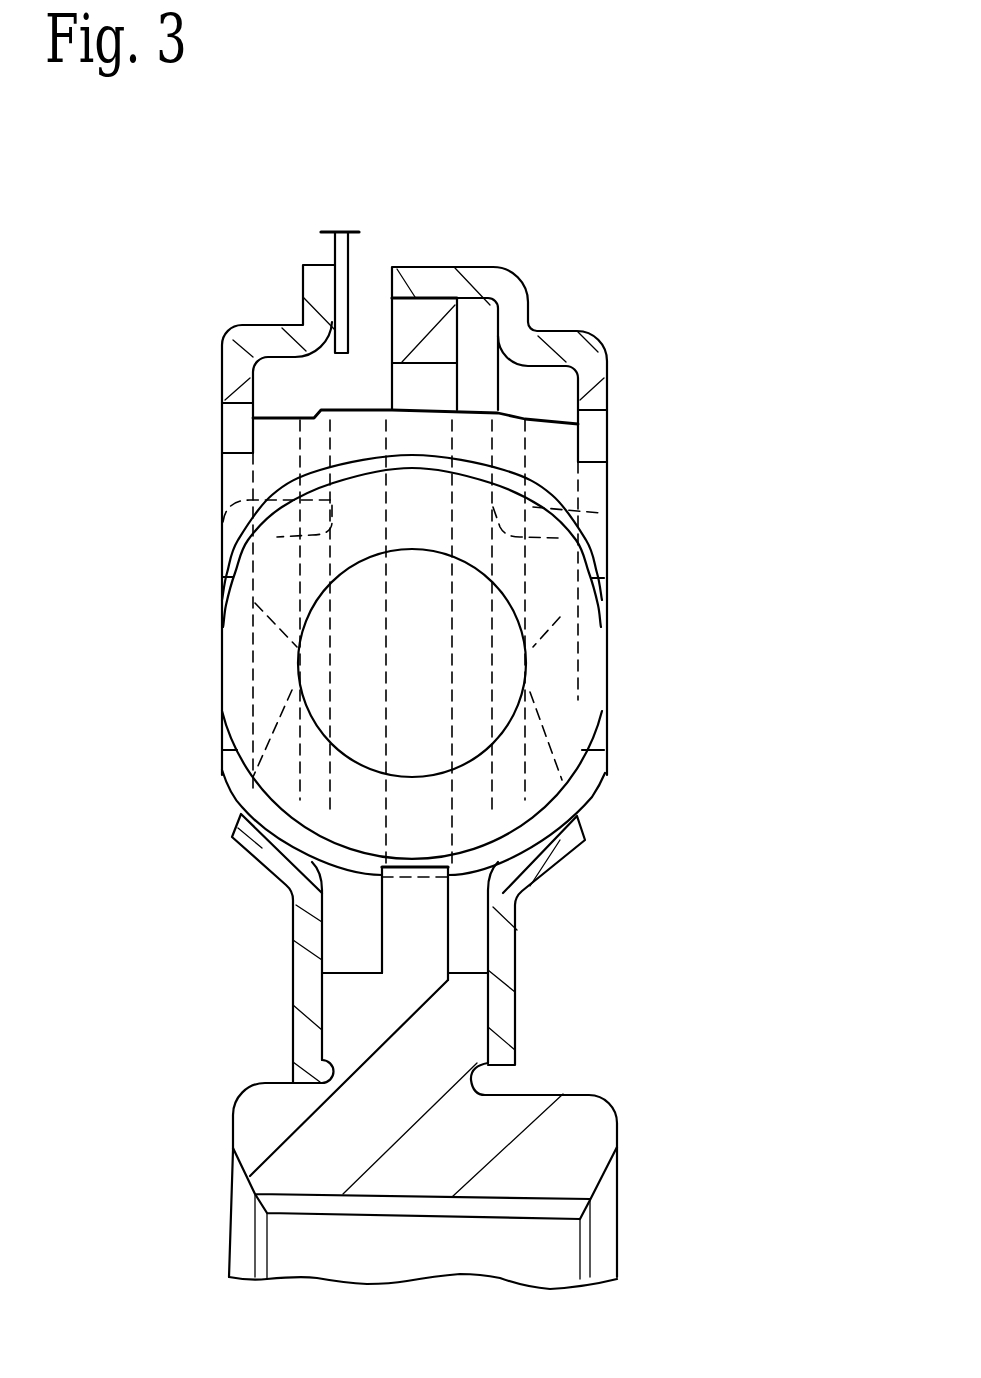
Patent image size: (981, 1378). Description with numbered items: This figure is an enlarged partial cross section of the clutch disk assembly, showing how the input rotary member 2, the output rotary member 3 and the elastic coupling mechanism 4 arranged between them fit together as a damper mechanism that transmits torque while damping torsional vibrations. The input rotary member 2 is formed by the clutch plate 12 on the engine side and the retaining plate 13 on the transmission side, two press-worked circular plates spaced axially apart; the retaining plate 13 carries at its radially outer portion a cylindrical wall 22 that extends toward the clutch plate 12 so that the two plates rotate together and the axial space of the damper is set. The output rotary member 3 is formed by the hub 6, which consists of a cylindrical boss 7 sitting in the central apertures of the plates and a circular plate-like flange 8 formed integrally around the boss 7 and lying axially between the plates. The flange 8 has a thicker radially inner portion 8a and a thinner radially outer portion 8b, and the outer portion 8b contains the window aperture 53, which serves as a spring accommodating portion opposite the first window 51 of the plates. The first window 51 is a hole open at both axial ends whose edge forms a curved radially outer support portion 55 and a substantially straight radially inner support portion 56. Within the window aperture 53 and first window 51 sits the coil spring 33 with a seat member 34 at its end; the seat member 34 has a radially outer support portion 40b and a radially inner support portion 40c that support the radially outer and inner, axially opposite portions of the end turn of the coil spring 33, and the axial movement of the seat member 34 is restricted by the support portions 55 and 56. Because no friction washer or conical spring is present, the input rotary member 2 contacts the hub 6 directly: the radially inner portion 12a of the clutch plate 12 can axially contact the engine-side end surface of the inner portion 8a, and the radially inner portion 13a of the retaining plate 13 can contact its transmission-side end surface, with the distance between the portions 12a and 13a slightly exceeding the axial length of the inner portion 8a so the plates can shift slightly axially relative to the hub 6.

The input rotary member 2 is at (253, 221).
The cylindrical wall 22 is at (408, 265).
The radially outer portion 8b is at (438, 345).
The window aperture 53 is at (541, 447).
The radially outer support portion 40b is at (562, 400).
The radially outer support portion 55 is at (237, 375).
The first window 51 is at (187, 449).
The seat member 34 is at (627, 511).
The elastic coupling mechanism 4 is at (739, 546).
The coil spring 33 is at (565, 643).
The radially inner support portion 40c is at (235, 780).
The radially inner support portion 56 is at (253, 863).
The flange 8 is at (434, 931).
The clutch plate 12 is at (222, 958).
The radially inner portion 12a is at (300, 1017).
The retaining plate 13 is at (687, 952).
The radially inner portion 13a is at (498, 955).
The radially inner portion 8a is at (438, 1020).
The boss 7 is at (538, 1147).
The hub 6 is at (670, 1122).
The output rotary member 3 is at (691, 1193).